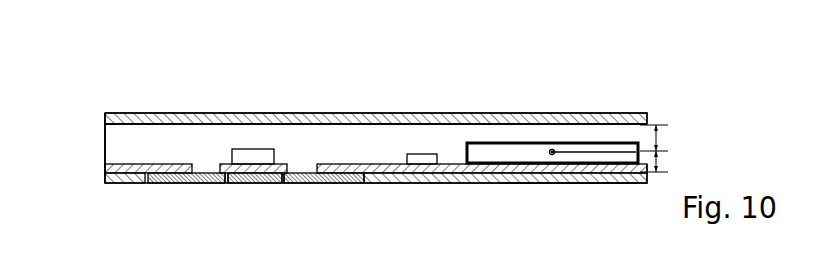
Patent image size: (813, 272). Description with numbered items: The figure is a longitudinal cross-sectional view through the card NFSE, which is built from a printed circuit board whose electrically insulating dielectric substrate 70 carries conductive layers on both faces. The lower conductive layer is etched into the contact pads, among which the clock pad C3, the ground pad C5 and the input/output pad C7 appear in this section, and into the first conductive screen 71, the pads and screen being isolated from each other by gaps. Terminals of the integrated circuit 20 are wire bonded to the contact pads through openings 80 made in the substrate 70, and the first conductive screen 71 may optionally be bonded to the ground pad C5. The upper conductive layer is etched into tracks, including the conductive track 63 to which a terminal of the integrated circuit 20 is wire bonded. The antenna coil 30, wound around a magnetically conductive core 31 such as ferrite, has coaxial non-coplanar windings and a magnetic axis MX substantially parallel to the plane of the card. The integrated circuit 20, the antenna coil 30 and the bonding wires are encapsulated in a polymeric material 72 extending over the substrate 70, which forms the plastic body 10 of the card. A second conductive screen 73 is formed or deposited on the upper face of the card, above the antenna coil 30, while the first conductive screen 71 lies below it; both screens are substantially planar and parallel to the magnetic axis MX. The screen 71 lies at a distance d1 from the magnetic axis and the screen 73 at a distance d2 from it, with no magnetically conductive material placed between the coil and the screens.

The card NFSE is at (104, 88).
The second conductive screen 73 is at (105, 120).
The plastic body 10 is at (113, 146).
The polymeric material 72 is at (376, 148).
The dielectric substrate 70 is at (108, 168).
The first conductive screen 71 is at (122, 184).
The contact pad C3 is at (153, 184).
The ground contact pad C5 is at (272, 184).
The contact pad C7 is at (355, 184).
The openings 80 is at (203, 184).
The integrated circuit 20 is at (256, 148).
The conductive track 63 is at (423, 154).
The antenna coil 30 is at (590, 143).
The magnetically conductive core 31 is at (623, 150).
The magnetic axis MX is at (550, 170).
The distance d1 is at (662, 161).
The distance d2 is at (662, 138).